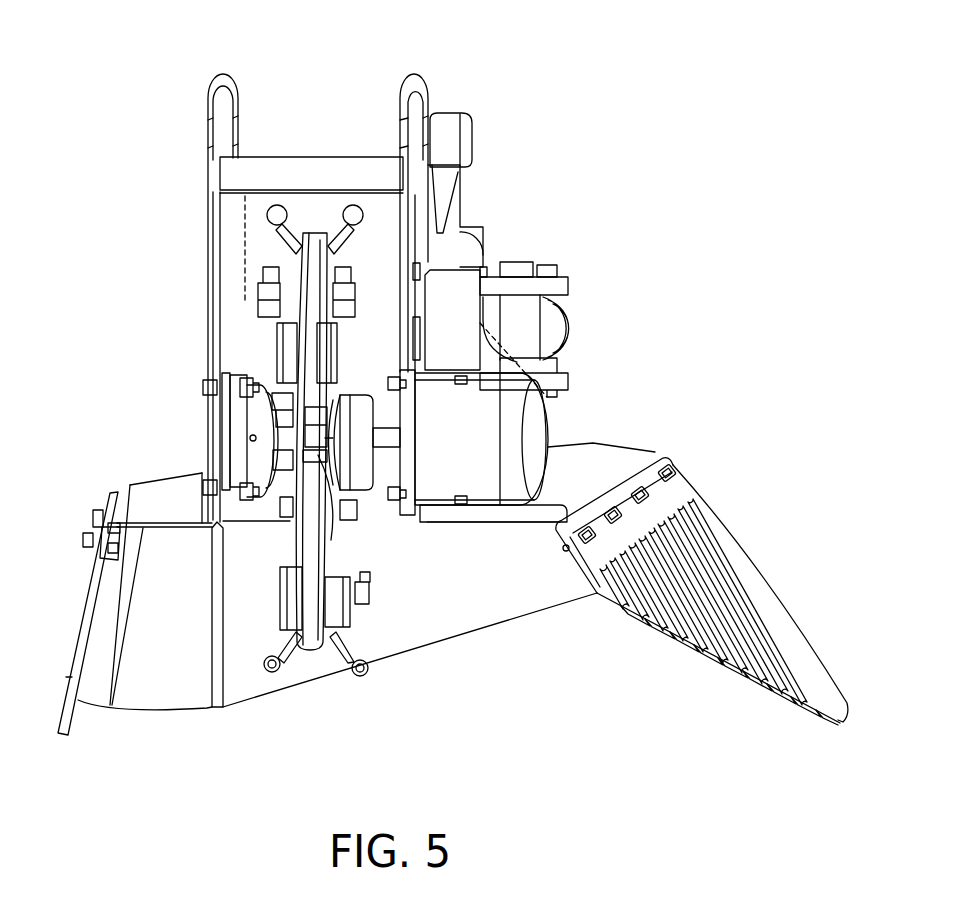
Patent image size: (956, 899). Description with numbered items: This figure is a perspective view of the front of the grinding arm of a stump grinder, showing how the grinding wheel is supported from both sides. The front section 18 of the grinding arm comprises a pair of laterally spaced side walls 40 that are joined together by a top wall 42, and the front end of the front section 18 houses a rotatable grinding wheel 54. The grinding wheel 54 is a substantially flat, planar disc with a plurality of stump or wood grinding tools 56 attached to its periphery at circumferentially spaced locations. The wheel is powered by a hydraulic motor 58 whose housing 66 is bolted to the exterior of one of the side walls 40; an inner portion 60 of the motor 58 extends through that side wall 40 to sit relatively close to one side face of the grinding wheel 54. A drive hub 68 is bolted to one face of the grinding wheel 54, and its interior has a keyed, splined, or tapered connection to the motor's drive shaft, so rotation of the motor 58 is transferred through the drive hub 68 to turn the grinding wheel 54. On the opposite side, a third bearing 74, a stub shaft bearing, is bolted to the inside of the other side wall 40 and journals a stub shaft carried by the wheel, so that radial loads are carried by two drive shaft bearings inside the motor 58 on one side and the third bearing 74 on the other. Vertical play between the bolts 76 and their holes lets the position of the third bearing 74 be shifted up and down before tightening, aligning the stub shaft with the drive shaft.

The front section 18 is at (396, 70).
The side walls 40 is at (208, 263).
The top wall 42 is at (290, 168).
The grinding wheel 54 is at (316, 633).
The wood grinding tools 56 is at (272, 664).
The hydraulic motor 58 is at (538, 428).
The inner portion 60 is at (388, 464).
The housing 66 is at (510, 470).
The drive hub 68 is at (362, 393).
The third bearing 74 is at (248, 450).
The bolts 76 is at (245, 375).